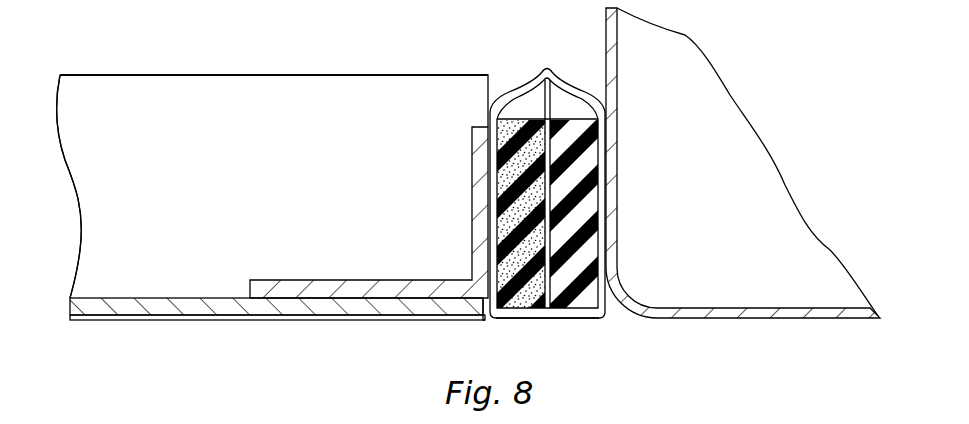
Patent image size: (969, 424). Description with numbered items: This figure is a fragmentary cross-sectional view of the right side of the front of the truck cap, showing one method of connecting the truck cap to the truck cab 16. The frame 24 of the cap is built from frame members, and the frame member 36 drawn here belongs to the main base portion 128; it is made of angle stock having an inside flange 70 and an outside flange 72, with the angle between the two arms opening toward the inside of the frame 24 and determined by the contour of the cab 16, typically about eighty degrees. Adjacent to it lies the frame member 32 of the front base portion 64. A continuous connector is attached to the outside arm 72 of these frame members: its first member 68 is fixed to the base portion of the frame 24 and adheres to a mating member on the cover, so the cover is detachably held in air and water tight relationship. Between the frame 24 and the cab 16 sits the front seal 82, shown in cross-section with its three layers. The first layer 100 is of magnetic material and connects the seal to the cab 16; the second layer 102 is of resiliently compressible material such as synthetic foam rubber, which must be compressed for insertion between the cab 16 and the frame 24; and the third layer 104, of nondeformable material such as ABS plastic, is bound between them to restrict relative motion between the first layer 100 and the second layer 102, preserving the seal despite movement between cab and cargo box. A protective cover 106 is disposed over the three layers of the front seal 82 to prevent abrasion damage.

The cab 16 is at (715, 314).
The frame 24 is at (383, 61).
The frame member 32 is at (371, 290).
The frame member 36 is at (135, 235).
The front base portion 64 is at (466, 325).
The first member of the continuous connector 68 is at (330, 321).
The inside flange 70 is at (275, 155).
The outside flange 72 is at (201, 311).
The front seal 82 is at (577, 92).
The first layer 100 is at (573, 299).
The second layer 102 is at (536, 310).
The third layer 104 is at (546, 116).
The protective cover 106 is at (553, 316).
The main base portion 128 is at (115, 72).